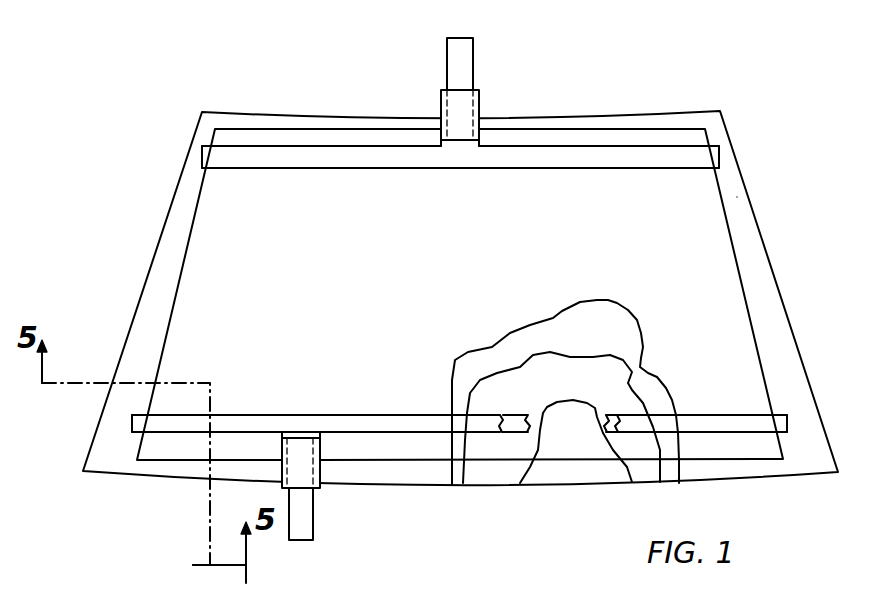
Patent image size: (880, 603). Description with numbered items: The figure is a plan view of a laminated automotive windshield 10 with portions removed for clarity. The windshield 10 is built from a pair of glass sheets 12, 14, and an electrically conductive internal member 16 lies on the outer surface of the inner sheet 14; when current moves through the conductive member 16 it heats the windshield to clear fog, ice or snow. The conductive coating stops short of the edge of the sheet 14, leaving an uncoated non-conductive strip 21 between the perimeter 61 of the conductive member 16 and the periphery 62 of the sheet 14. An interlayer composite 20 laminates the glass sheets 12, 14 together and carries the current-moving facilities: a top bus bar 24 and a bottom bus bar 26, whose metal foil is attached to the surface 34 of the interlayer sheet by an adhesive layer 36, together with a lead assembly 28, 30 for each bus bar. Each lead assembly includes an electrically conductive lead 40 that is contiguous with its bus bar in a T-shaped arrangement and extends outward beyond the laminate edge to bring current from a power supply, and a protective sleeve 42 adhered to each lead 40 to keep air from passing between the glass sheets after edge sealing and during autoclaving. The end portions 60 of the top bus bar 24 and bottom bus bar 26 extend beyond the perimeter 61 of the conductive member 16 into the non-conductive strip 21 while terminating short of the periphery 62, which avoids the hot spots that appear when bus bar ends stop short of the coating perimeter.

The automotive windshield 10 is at (448, 295).
The glass sheet 12 is at (591, 452).
The inner glass sheet 14 is at (541, 262).
The internal member 16 is at (600, 347).
The interlayer composite 20 is at (537, 472).
The non-conductive strip 21 is at (620, 121).
The top bus bar 24 is at (368, 167).
The bottom bus bar 26 is at (417, 415).
The lead assembly 28 is at (460, 138).
The lead assembly 30 is at (459, 457).
The surface of the interlayer sheet 34 is at (566, 392).
The adhesive layer 36 is at (613, 418).
The electrically conductive lead 40 is at (473, 58).
The protective sleeve 42 is at (481, 98).
The end portions of the bus bars 60 is at (202, 157).
The perimeter of the conductive member 61 is at (748, 302).
The periphery of the sheet 62 is at (772, 258).